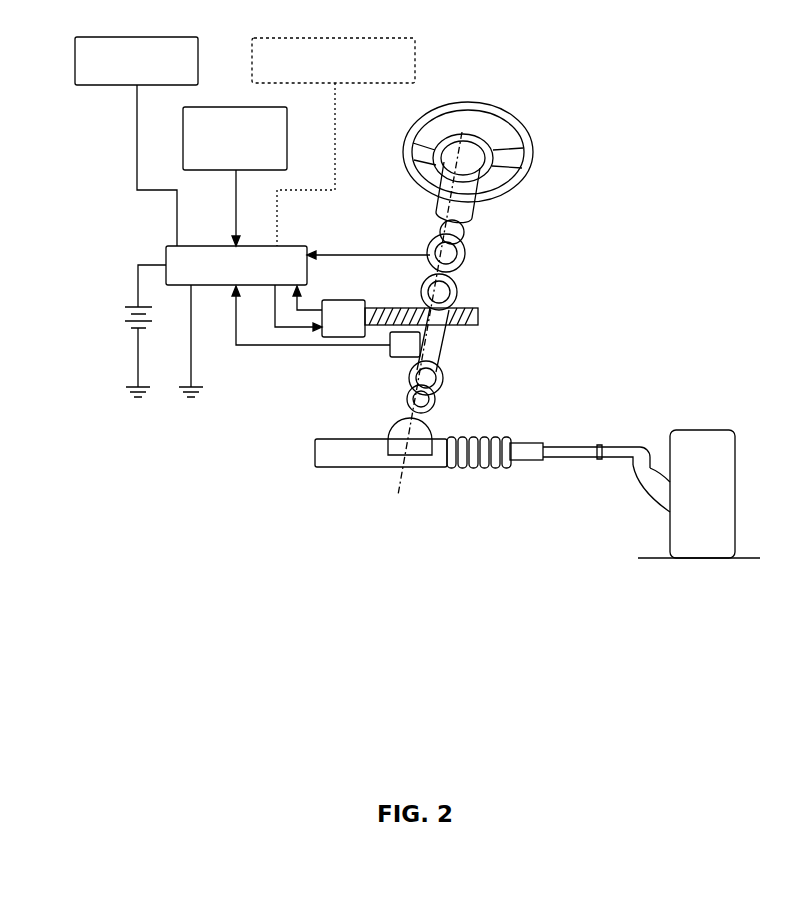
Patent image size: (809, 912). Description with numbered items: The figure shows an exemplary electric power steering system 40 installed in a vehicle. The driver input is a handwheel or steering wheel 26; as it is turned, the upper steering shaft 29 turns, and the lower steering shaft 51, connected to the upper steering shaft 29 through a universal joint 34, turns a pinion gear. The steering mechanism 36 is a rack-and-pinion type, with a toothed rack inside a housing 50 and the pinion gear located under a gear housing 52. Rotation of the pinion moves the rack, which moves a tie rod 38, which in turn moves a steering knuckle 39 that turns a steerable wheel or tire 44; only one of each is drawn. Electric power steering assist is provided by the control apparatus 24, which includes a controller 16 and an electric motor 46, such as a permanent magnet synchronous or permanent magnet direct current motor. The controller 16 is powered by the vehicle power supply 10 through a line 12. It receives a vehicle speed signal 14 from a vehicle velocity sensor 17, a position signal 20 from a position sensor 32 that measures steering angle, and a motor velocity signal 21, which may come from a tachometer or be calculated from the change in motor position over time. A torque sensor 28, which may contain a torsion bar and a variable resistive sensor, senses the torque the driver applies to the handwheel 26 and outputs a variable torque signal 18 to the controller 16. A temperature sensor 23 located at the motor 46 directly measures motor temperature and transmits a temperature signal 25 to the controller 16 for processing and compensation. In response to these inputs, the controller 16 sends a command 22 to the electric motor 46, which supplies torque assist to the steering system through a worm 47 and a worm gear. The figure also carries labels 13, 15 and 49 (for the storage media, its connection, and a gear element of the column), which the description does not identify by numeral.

The vehicle power supply 10 is at (125, 323).
The line 12 is at (148, 262).
The storage media 13 is at (98, 88).
The vehicle speed signal 14 is at (232, 178).
The storage media connection 15 is at (135, 130).
The controller 16 is at (217, 243).
The vehicle velocity sensor 17 is at (236, 105).
The torque signal 18 is at (373, 252).
The position signal 20 is at (311, 352).
The motor velocity signal 21 is at (311, 300).
The command 22 is at (285, 337).
The temperature sensor 23 is at (420, 72).
The control apparatus 24 is at (598, 243).
The temperature signal 25 is at (340, 128).
The steering wheel 26 is at (505, 120).
The torque sensor 28 is at (440, 225).
The upper steering shaft 29 is at (465, 262).
The position sensor 32 is at (388, 355).
The universal joint 34 is at (440, 378).
The steering mechanism 36 is at (496, 433).
The tie rod 38 is at (570, 458).
The steering knuckle 39 is at (648, 488).
The electric power steering system 40 is at (652, 310).
The steerable wheel 44 is at (695, 438).
The electric motor 46 is at (350, 298).
The worm 47 is at (478, 315).
The gear assembly 49 is at (458, 295).
The housing 50 is at (342, 458).
The lower steering shaft 51 is at (432, 398).
The gear housing 52 is at (395, 420).